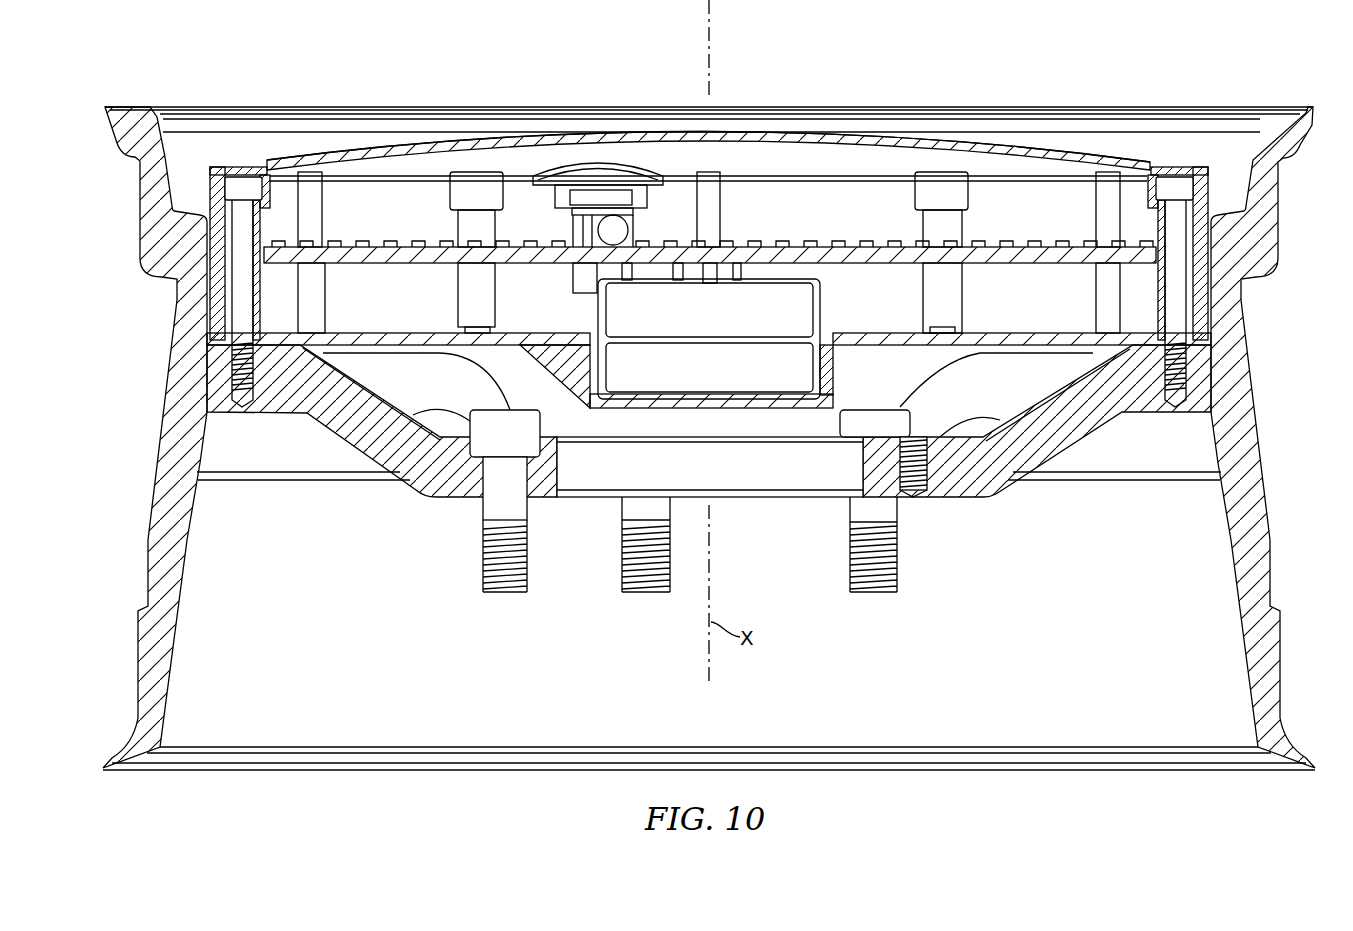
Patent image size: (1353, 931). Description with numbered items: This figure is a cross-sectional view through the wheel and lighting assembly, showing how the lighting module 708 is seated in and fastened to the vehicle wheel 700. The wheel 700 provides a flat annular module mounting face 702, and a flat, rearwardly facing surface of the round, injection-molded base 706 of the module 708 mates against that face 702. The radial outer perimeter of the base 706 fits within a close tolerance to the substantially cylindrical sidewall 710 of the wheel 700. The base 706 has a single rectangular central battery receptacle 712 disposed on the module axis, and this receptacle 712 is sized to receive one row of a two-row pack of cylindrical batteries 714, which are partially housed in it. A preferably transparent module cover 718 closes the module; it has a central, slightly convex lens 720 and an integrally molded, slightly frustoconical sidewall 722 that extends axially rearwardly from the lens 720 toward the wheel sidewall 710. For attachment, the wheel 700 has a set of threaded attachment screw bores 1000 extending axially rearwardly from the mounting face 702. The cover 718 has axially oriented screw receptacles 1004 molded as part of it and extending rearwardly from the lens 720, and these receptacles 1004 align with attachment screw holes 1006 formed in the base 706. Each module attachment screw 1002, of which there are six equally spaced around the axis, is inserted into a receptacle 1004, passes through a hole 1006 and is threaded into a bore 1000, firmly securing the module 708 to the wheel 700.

The vehicle wheel 700 is at (148, 560).
The module mounting face 702 is at (300, 330).
The base 706 is at (1000, 335).
The lighting module 708 is at (1096, 141).
The sidewall 710 is at (1216, 222).
The battery receptacle 712 is at (833, 352).
The batteries 714 is at (731, 322).
The module cover 718 is at (351, 154).
The lens 720 is at (807, 128).
The sidewall 722 is at (214, 190).
The threaded attachment screw bores 1000 is at (256, 362).
The module attachment screws 1002 is at (238, 301).
The screw receptacles 1004 is at (247, 176).
The attachment screw holes 1006 is at (1168, 345).